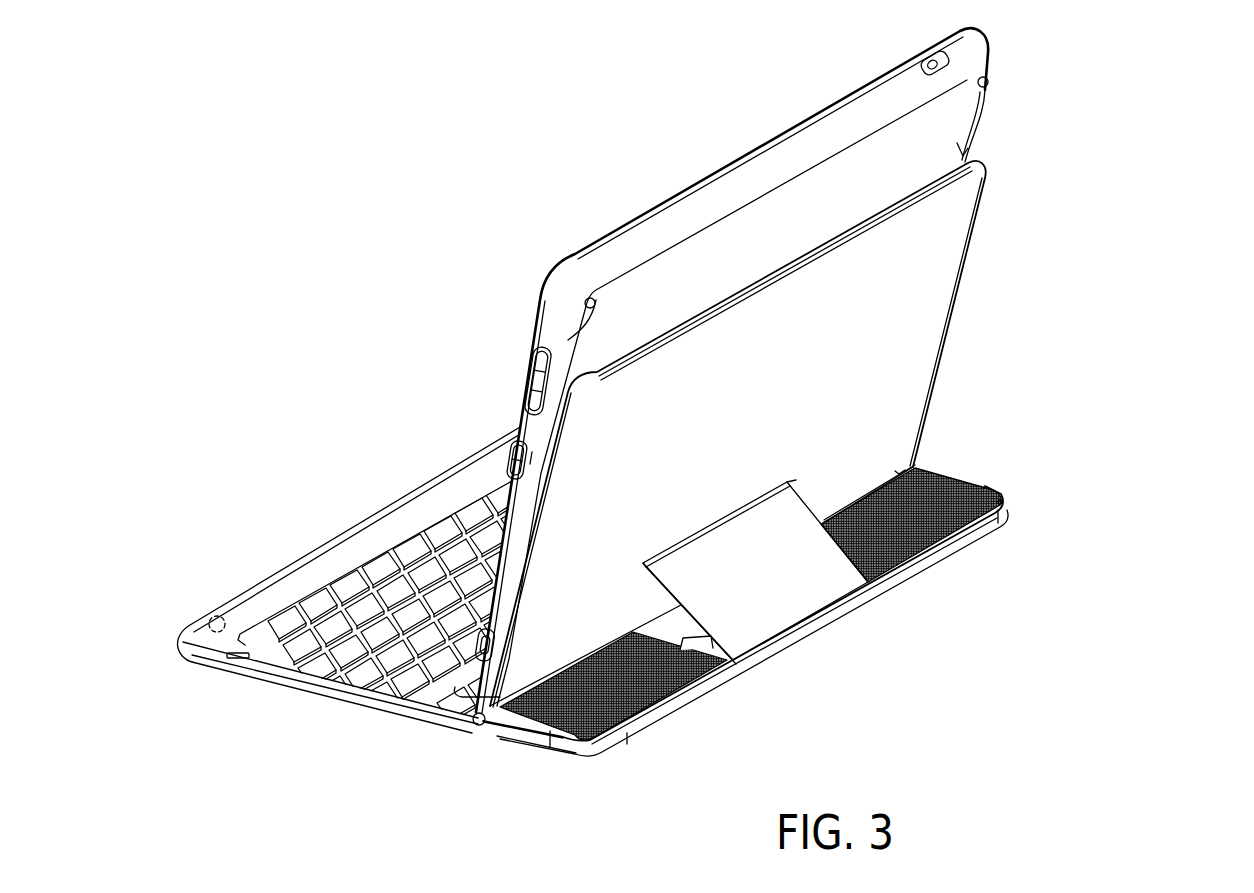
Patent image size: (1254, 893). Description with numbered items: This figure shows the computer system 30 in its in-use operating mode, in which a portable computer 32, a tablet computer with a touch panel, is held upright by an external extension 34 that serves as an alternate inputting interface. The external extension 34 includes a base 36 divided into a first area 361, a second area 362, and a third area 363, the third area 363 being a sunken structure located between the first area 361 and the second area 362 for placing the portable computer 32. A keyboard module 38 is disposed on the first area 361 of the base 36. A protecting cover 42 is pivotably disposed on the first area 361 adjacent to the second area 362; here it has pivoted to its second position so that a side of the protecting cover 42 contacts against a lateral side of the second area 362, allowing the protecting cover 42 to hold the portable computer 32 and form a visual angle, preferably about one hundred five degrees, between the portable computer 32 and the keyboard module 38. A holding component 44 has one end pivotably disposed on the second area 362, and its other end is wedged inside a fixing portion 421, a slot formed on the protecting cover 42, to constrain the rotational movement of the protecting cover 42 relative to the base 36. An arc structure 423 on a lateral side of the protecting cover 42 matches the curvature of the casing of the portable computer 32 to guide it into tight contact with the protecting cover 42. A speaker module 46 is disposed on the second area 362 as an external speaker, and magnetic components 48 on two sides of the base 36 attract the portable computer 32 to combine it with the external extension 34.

The computer system 30 is at (361, 143).
The portable computer 32 is at (787, 150).
The external extension 34 is at (1210, 488).
The base 36 is at (410, 788).
The first area 361 is at (370, 697).
The second area 362 is at (520, 727).
The third area 363 is at (453, 720).
The keyboard module 38 is at (553, 730).
The protecting cover 42 is at (923, 373).
The fixing portion 421 is at (781, 478).
The arc structure 423 is at (987, 92).
The holding component 44 is at (773, 610).
The speaker module 46 is at (940, 547).
The magnetic component 48 is at (203, 613).